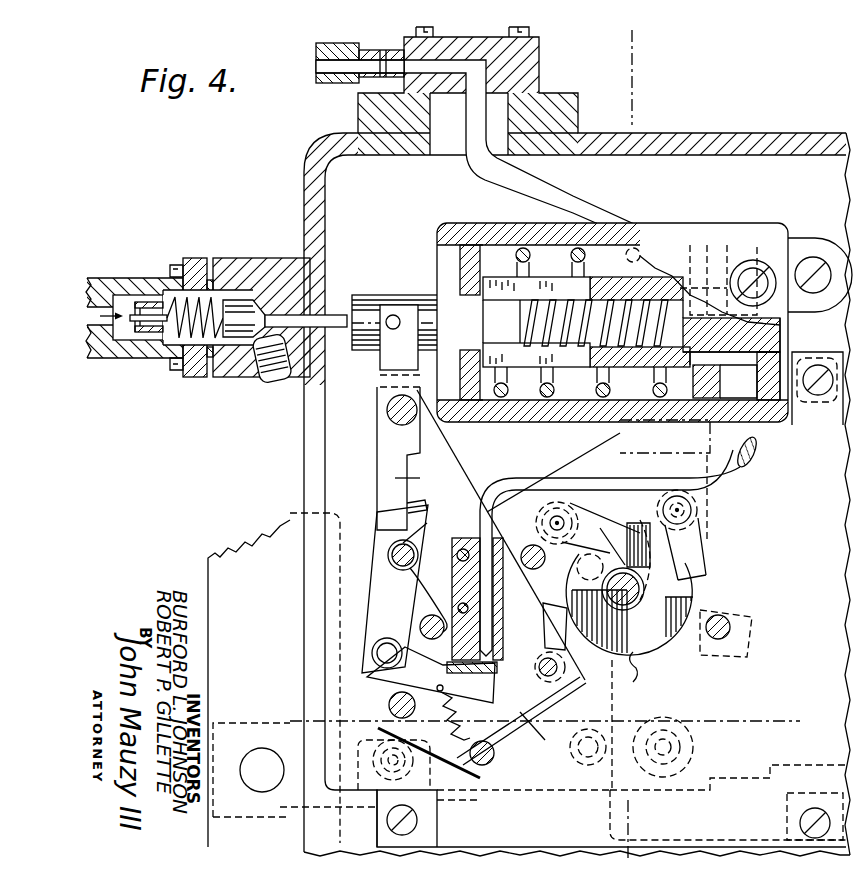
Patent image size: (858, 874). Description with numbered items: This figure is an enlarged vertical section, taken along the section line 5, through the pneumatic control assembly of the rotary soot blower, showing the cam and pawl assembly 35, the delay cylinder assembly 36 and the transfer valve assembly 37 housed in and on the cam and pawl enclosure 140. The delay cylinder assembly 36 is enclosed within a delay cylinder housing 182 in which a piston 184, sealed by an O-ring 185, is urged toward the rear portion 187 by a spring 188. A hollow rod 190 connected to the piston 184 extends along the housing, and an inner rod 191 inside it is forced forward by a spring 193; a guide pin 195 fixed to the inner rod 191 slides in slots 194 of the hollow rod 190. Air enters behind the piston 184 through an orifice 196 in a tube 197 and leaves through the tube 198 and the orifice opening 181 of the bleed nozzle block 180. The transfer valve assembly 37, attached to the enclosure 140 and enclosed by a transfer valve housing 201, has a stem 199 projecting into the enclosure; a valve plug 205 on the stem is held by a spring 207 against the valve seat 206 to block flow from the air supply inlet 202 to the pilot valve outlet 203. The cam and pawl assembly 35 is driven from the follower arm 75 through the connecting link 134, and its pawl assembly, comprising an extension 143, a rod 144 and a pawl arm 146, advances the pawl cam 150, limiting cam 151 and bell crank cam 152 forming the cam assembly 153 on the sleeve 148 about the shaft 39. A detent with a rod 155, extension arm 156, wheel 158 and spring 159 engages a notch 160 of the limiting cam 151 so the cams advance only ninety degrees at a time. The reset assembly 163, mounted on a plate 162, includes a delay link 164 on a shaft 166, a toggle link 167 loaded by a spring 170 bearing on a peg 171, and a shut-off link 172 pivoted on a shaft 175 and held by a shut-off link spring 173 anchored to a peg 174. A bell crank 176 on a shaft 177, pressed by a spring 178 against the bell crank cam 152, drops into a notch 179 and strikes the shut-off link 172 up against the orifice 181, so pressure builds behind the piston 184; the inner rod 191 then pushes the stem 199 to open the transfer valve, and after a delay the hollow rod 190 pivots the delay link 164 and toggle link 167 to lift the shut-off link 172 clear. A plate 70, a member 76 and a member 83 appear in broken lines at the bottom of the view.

The section line 5- 5 is at (637, 47).
The cam and pawl assembly 35 is at (652, 580).
The delay cylinder assembly 36 is at (644, 343).
The transfer valve assembly 37 is at (198, 307).
The shaft 39 is at (648, 589).
The base plate 70 is at (777, 771).
The follower arm 75 is at (482, 792).
The knob 76 is at (249, 683).
The shaft 83 is at (703, 725).
The connecting link 134 is at (630, 702).
The cam and pawl enclosure 140 is at (776, 145).
The extension 143 is at (614, 530).
The rod 144 is at (549, 518).
The pawl arm 146 is at (556, 500).
The sleeve 148 is at (655, 575).
The pawl cam 150 is at (650, 548).
The limiting cam 151 is at (565, 660).
The bell crank cam 152 is at (692, 645).
The cam assembly 153 is at (704, 613).
The rod 155 is at (685, 510).
The extension arm 156 is at (660, 565).
The wheel 158 is at (707, 600).
The spring 159 is at (650, 582).
The notch 160 is at (575, 600).
The plate 162 is at (395, 478).
The reset assembly 163 is at (377, 437).
The delay link 164 is at (385, 361).
The shaft 166 is at (388, 411).
The toggle link 167 is at (387, 606).
The spring 170 is at (400, 575).
The peg 171 is at (424, 627).
The shut-off link 172 is at (408, 686).
The shut-off link spring 173 is at (466, 728).
The peg 174 is at (486, 753).
The shaft 175 is at (380, 647).
The bell crank 176 is at (513, 555).
The shaft 177 is at (496, 680).
The spring 178 is at (547, 735).
The notch 179 is at (672, 656).
The bleed nozzle block 180 is at (491, 601).
The orifice opening 181 is at (495, 638).
The delay cylinder housing 182 is at (487, 230).
The piston 184 is at (742, 405).
The O-ring 185 is at (722, 398).
The rear portion 187 is at (780, 328).
The spring 188 is at (494, 412).
The hollow rod 190 is at (634, 370).
The inner rod 191 is at (421, 295).
The spring 193 is at (590, 350).
The slots 194 is at (546, 282).
The guide pin 195 is at (491, 294).
The orifice 196 is at (362, 84).
The tube 197 is at (577, 199).
The tube 198 is at (577, 478).
The stem 199 is at (334, 312).
The transfer valve housing 201 is at (270, 262).
The air supply inlet 202 is at (89, 293).
The pilot valve outlet 203 is at (258, 390).
The valve plug 205 is at (233, 312).
The valve seat 206 is at (226, 378).
The spring 207 is at (174, 337).